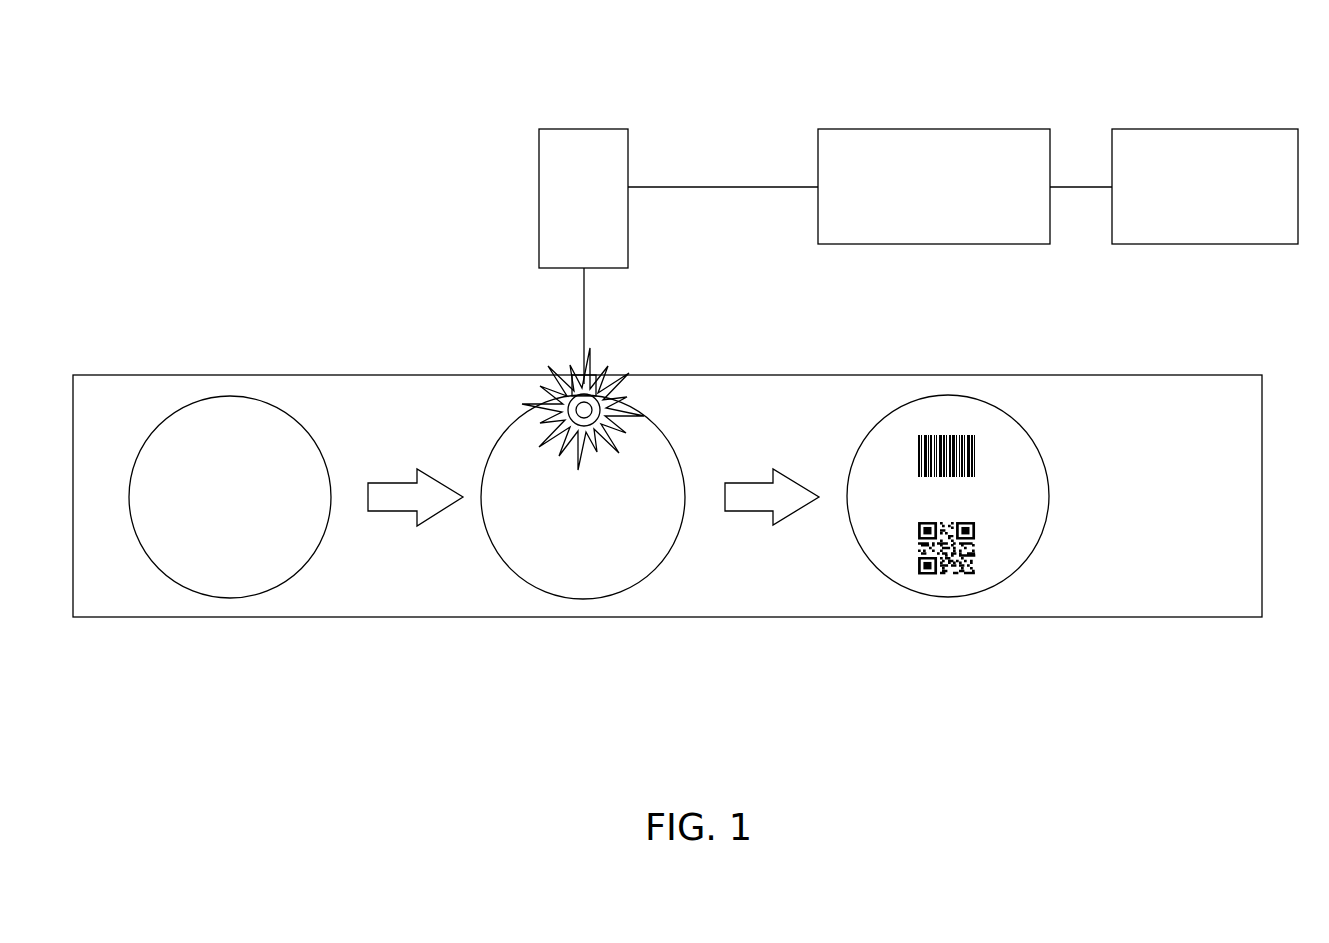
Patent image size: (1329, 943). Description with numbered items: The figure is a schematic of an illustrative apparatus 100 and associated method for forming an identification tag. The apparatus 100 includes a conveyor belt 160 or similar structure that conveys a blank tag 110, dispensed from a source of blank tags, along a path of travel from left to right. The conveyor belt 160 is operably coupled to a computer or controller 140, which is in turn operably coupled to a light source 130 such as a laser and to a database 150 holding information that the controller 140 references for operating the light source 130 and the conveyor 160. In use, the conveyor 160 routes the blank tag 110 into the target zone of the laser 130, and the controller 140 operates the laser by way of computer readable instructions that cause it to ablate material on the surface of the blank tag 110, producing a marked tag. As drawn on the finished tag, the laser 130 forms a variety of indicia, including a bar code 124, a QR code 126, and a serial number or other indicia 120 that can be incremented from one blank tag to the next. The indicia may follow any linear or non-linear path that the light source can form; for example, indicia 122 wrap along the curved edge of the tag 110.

The apparatus 100 is at (1126, 68).
The blank tag 110 is at (244, 626).
The indicia 120 is at (992, 459).
The indicia 122 is at (952, 405).
The bar code 124 is at (963, 452).
The QR code 126 is at (973, 528).
The light source 130 is at (581, 129).
The controller 140 is at (934, 129).
The database 150 is at (1205, 129).
The conveyor belt 160 is at (1137, 593).